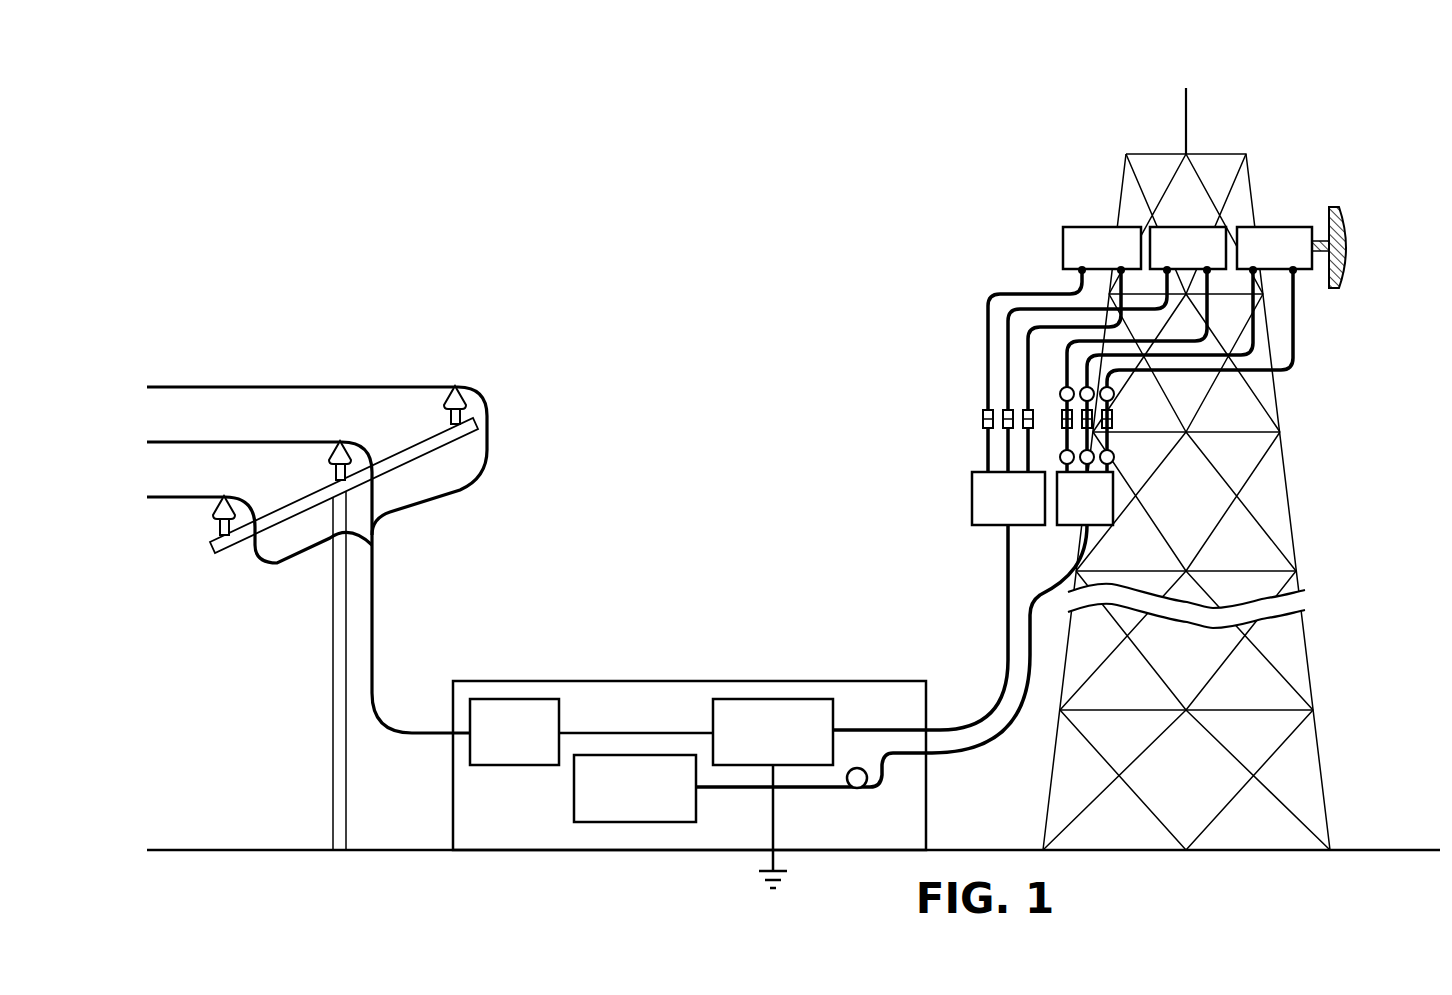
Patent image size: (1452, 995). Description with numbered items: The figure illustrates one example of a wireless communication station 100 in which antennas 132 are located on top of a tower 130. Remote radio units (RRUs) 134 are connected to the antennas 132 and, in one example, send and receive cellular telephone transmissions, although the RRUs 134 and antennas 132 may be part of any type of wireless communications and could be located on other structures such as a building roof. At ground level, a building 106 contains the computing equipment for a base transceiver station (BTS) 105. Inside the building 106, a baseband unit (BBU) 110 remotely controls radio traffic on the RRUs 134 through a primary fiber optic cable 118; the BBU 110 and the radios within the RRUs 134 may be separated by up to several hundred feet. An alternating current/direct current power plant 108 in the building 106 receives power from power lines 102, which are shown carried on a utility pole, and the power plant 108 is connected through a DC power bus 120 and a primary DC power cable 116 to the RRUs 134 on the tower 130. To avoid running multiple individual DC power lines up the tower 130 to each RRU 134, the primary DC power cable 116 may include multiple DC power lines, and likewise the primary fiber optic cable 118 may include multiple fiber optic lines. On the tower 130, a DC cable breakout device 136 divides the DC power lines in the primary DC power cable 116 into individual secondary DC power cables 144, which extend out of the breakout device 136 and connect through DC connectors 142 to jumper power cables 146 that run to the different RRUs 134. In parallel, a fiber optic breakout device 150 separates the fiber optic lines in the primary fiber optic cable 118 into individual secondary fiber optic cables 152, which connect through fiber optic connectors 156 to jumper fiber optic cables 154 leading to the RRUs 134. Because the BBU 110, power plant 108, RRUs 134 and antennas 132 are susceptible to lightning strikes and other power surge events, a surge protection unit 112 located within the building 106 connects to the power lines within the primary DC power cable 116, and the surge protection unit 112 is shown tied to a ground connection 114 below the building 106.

The wireless communication station 100 is at (643, 160).
The power lines 102 is at (302, 387).
The base transceiver station (BTS) 105 is at (620, 666).
The building 106 is at (688, 681).
The alternating current/direct current (AC/DC) power plant 108 is at (517, 699).
The baseband unit (BBU) 110 is at (574, 790).
The surge protection unit 112 is at (773, 699).
The ground connection 114 is at (774, 815).
The primary DC power cable 116 is at (969, 718).
The primary fiber optic cable 118 is at (980, 748).
The DC power bus 120 is at (603, 727).
The tower 130 is at (1258, 186).
The antennas 132 is at (1187, 122).
The remote radio units (RRUs) 134 is at (1097, 227).
The DC cable breakout device 136 is at (1026, 511).
The DC connectors 142 is at (983, 418).
The secondary DC power cables 144 is at (988, 455).
The jumper power cables 146 is at (988, 333).
The fiber optic (FO) breakout device 150 is at (1103, 511).
The secondary fiber optic cables 152 is at (1113, 448).
The jumper fiber optic cables 154 is at (1294, 316).
The fiber optic connectors 156 is at (1113, 418).